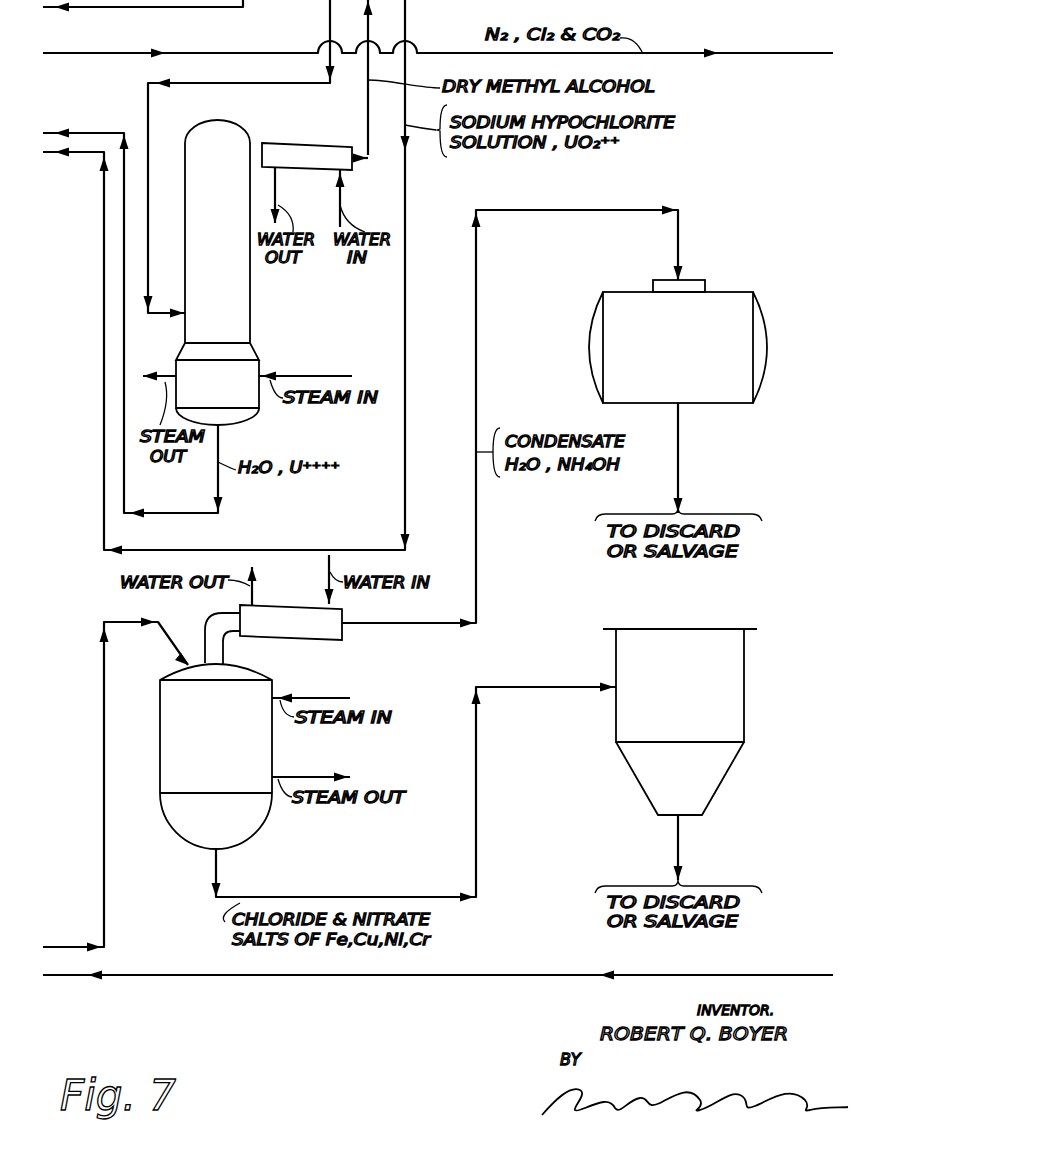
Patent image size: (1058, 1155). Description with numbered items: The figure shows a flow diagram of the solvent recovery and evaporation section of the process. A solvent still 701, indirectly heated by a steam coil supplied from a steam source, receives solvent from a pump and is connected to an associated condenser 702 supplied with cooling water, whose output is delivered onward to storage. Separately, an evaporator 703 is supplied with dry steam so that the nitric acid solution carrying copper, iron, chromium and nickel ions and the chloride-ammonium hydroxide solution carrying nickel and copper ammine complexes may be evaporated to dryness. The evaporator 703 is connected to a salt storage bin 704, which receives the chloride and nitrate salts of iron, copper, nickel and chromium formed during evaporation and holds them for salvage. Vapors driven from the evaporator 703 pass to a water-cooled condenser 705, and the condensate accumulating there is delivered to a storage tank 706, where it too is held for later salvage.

The solvent still 701 is at (250, 313).
The condenser 702 is at (327, 113).
The evaporator 703 is at (258, 835).
The salt storage bin 704 is at (718, 790).
The condenser 705 is at (340, 640).
The storage tank 706 is at (716, 290).